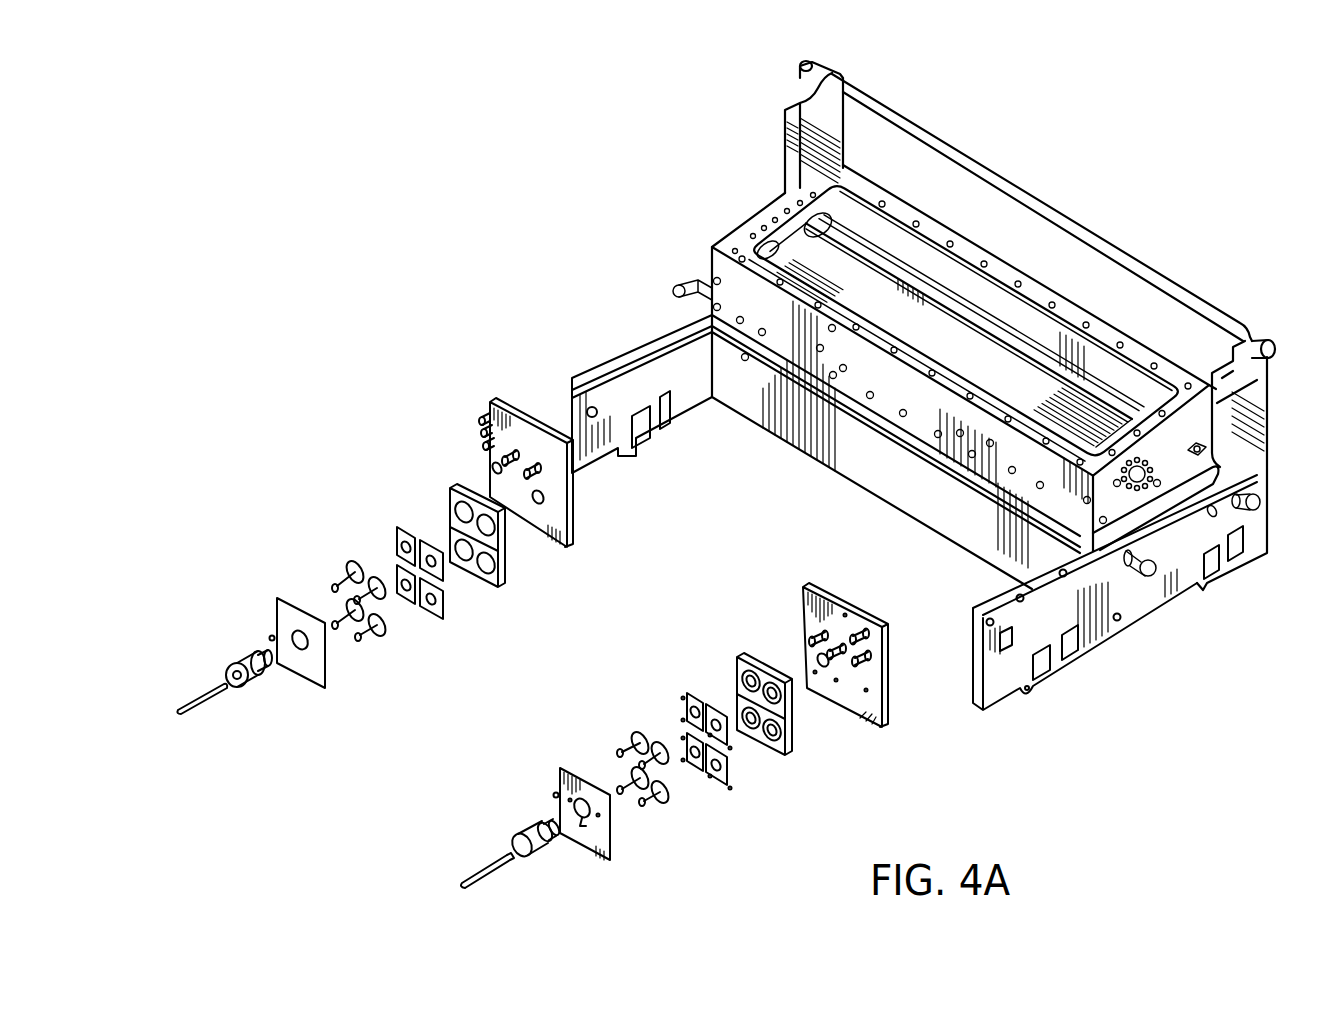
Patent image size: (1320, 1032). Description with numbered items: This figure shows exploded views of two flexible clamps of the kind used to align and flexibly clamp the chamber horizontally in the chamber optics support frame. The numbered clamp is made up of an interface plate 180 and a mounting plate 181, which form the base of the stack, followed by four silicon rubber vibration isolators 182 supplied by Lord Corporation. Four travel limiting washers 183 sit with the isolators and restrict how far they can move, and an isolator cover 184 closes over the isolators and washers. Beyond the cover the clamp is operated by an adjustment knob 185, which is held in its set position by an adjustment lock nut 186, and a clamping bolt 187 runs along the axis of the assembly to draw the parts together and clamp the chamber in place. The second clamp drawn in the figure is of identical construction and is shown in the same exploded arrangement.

The interface plate 180 is at (886, 707).
The mounting plate 181 is at (788, 724).
The vibration isolators 182 is at (738, 765).
The travel limiting washers 183 is at (677, 795).
The isolator cover 184 is at (610, 836).
The adjustment knob 185 is at (527, 853).
The adjustment lock nut 186 is at (540, 830).
The clamping bolt 187 is at (490, 870).